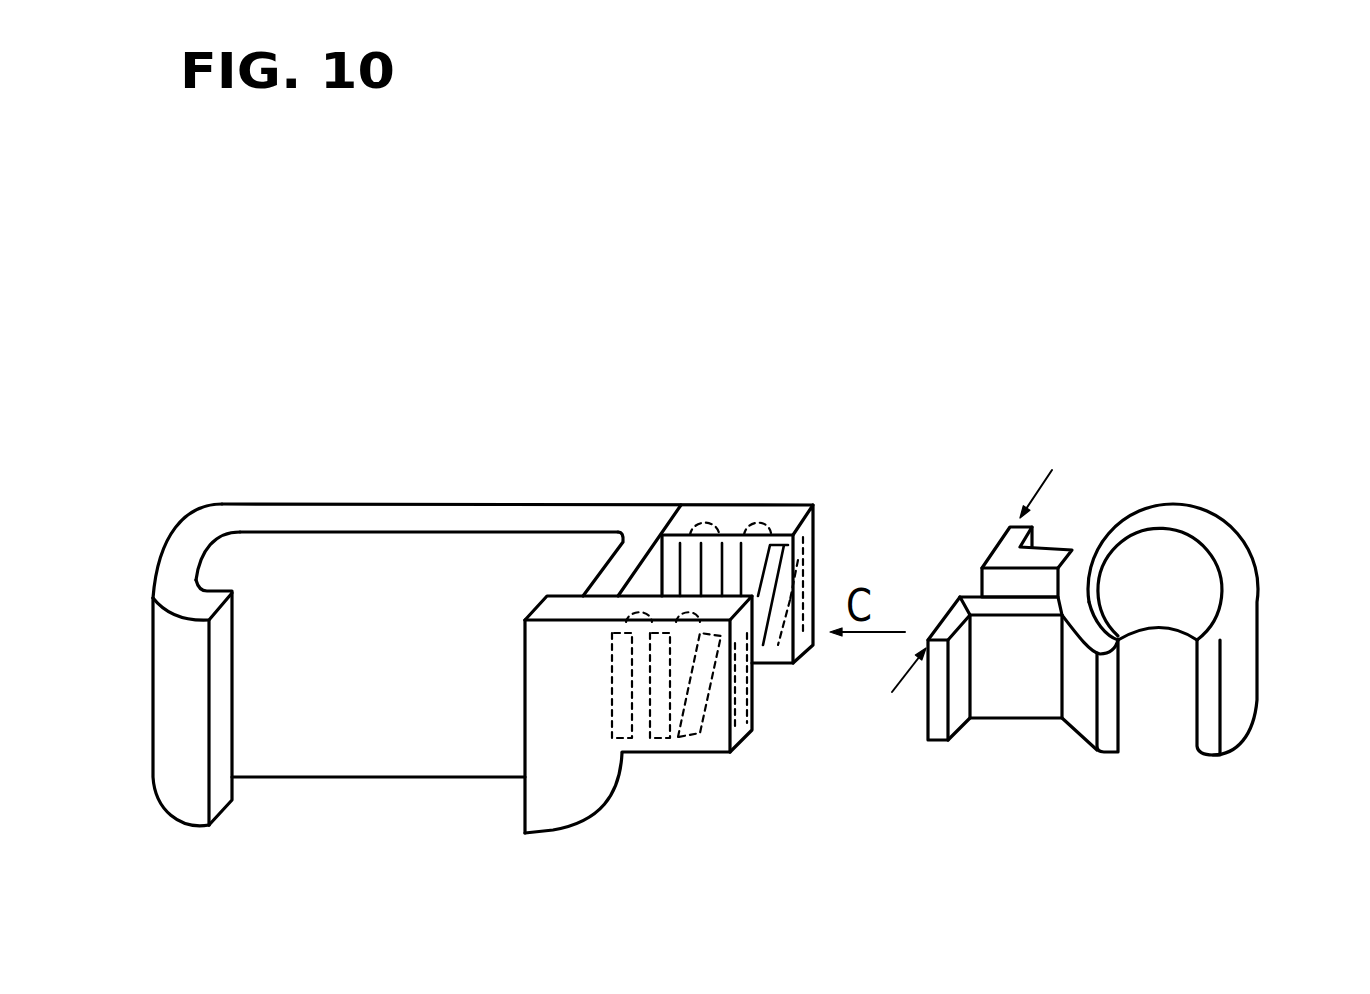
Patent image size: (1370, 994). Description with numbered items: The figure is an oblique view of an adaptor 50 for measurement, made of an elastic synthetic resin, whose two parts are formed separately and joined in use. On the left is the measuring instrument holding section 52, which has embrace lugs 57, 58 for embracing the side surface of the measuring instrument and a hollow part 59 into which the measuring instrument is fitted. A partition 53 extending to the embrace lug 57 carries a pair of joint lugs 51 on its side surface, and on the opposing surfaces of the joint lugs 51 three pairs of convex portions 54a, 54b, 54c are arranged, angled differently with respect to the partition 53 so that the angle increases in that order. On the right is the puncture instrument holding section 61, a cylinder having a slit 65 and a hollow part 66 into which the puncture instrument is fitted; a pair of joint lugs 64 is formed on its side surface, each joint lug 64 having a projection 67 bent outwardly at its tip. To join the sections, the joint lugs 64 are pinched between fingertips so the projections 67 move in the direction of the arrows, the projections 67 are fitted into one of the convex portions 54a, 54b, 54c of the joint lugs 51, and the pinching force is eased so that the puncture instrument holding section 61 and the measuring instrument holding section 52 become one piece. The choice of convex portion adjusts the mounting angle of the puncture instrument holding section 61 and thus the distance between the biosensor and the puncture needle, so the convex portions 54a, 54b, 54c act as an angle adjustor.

The adaptor 50 is at (856, 370).
The joint lugs 51 is at (778, 522).
The measuring instrument holding section 52 is at (353, 520).
The partition 53 is at (617, 563).
The convex portion 54a is at (688, 575).
The convex portion 54b is at (740, 570).
The convex portion 54c is at (768, 577).
The embrace lug 57 is at (550, 787).
The embrace lug 58 is at (177, 793).
The hollow part 59 is at (398, 570).
The puncture instrument holding section 61 is at (1248, 590).
The joint lugs 64 is at (1022, 610).
The slit 65 is at (1158, 717).
The hollow part 66 is at (1180, 560).
The projection 67 is at (1013, 540).